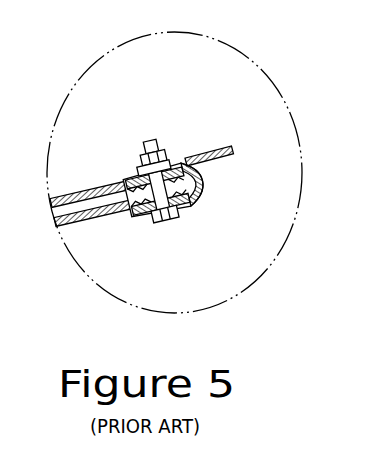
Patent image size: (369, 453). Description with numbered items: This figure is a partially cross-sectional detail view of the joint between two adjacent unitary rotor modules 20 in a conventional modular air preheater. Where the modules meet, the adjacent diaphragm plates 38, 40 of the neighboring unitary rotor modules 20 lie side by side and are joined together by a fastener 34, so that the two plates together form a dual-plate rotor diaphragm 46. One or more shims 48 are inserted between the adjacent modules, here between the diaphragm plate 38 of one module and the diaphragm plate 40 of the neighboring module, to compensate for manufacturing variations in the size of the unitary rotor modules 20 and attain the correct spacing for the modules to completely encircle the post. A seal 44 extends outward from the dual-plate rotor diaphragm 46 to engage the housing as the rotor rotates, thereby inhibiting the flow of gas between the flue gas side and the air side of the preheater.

The unitary rotor module 20 is at (202, 187).
The fastener 34 is at (186, 212).
The diaphragm plate 38 is at (59, 196).
The diaphragm plate 40 is at (65, 218).
The seal 44 is at (223, 161).
The dual-plate rotor diaphragm 46 is at (39, 197).
The shim 48 is at (198, 187).